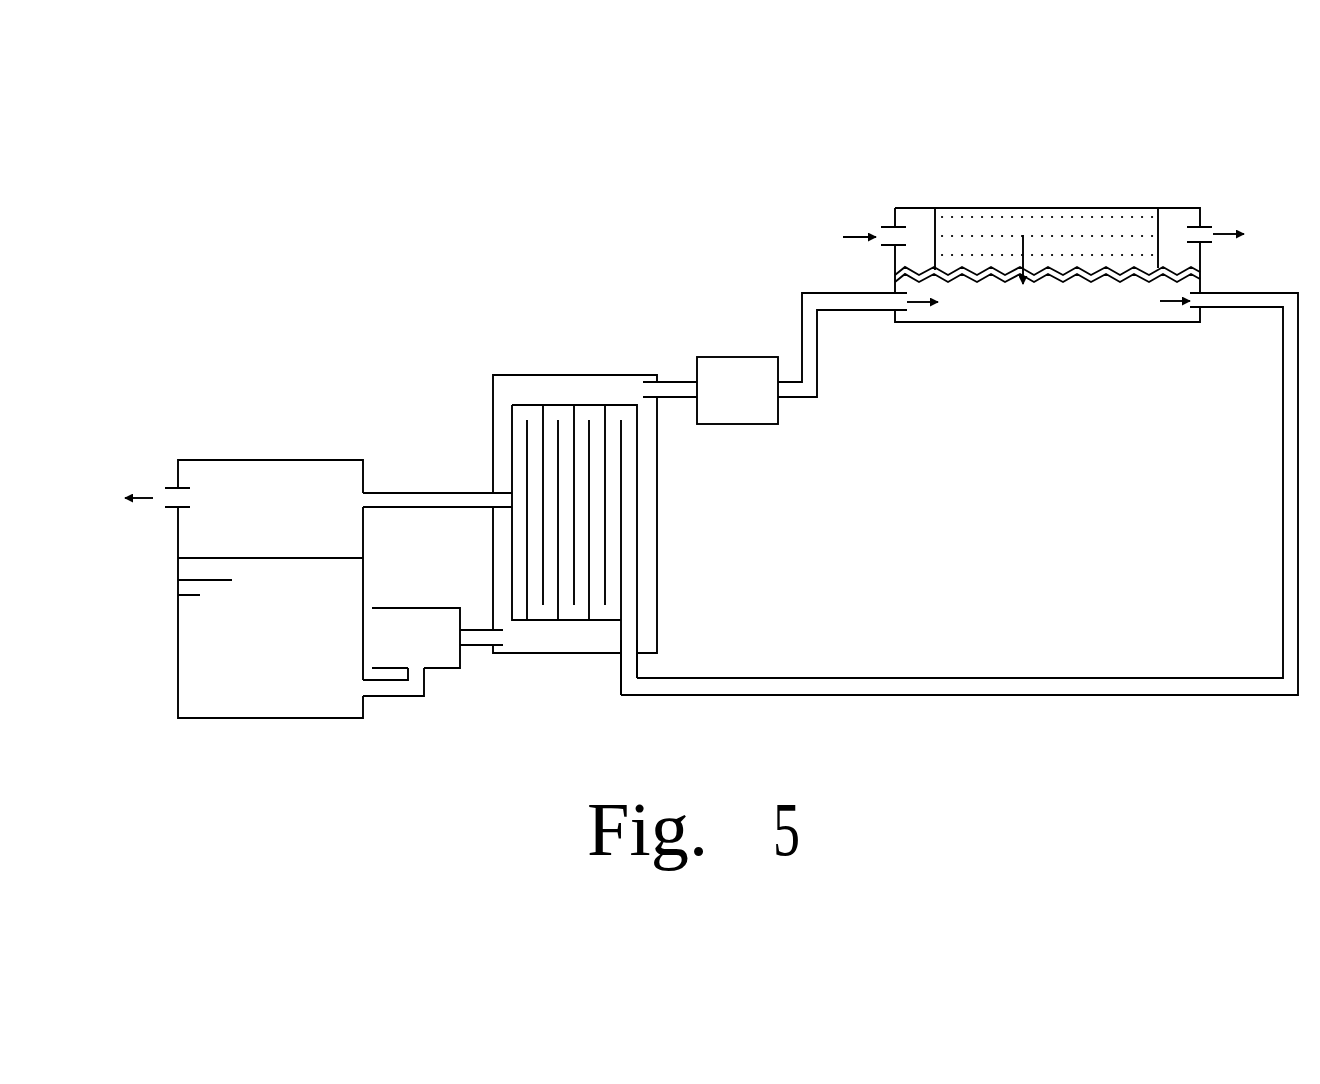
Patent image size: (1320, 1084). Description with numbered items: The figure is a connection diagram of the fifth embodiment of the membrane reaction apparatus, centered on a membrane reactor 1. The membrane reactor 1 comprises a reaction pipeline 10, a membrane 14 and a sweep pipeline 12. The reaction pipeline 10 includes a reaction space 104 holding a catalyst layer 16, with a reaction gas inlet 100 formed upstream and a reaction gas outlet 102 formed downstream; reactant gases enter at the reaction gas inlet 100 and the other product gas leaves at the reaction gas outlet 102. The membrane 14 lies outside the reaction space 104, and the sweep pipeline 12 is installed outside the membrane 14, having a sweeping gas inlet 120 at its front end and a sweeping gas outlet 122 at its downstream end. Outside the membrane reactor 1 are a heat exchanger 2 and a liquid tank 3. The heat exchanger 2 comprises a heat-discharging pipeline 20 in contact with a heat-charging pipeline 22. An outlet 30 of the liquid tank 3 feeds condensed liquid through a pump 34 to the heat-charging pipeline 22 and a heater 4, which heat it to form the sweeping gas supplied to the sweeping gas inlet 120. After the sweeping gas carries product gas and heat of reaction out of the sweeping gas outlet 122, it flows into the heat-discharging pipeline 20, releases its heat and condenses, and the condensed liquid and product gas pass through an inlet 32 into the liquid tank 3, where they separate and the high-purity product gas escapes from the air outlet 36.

The membrane reactor 1 is at (926, 178).
The reaction pipeline 10 is at (1022, 215).
The reaction gas inlet 100 is at (892, 226).
The reaction gas outlet 102 is at (1203, 225).
The reaction space 104 is at (1045, 242).
The sweep pipeline 12 is at (1058, 312).
The sweeping gas inlet 120 is at (890, 308).
The sweeping gas outlet 122 is at (1198, 303).
The membrane 14 is at (1203, 273).
The catalyst layer 16 is at (1123, 215).
The heat exchanger 2 is at (657, 522).
The heat-discharging pipeline 20 is at (628, 627).
The heat-charging pipeline 22 is at (575, 382).
The liquid tank 3 is at (214, 436).
The outlet 30 is at (363, 690).
The inlet 32 is at (359, 503).
The pump 34 is at (418, 614).
The air outlet 36 is at (170, 490).
The heater 4 is at (743, 355).